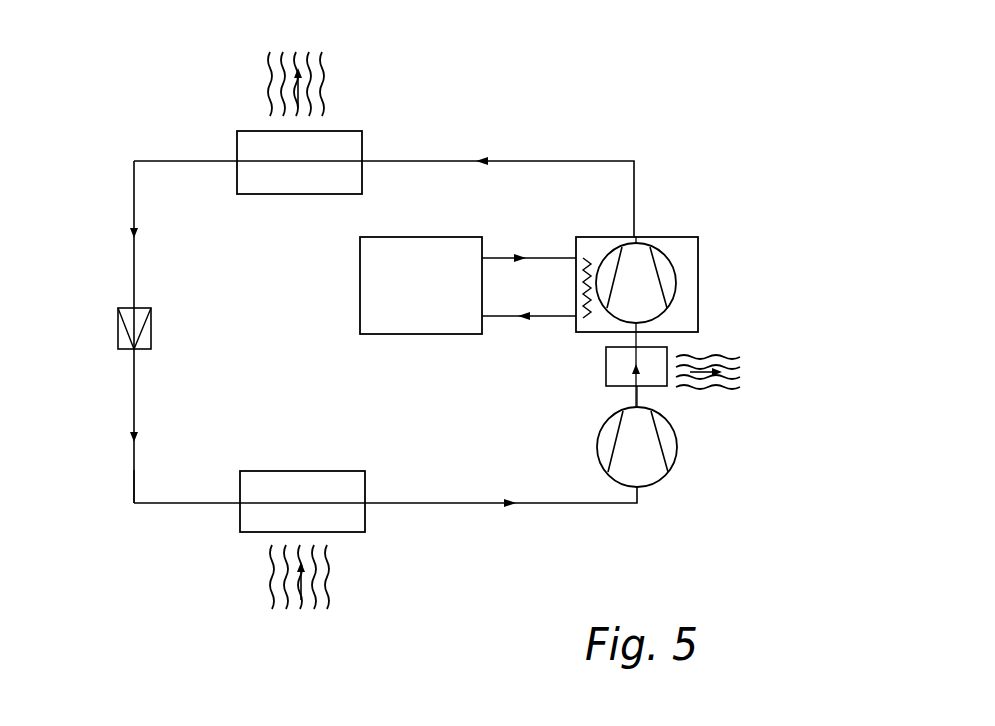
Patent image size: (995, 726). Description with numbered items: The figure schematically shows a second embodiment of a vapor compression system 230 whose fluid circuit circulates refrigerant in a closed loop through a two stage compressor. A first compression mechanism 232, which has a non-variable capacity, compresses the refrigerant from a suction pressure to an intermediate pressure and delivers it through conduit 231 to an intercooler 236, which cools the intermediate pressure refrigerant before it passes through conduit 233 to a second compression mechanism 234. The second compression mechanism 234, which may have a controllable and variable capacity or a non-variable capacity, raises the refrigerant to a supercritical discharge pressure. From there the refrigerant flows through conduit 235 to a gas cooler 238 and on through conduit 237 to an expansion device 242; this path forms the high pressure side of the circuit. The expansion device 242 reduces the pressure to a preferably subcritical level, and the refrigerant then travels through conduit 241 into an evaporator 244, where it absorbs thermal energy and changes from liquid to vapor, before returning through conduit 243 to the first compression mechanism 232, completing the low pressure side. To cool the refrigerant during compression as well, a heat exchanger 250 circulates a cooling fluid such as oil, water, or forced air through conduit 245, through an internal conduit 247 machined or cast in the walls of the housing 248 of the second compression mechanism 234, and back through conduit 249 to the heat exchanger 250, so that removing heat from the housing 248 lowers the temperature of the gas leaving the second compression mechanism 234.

The vapor compression system 230 is at (624, 82).
The conduit 231 is at (640, 395).
The first compression mechanism 232 is at (680, 450).
The conduit 233 is at (640, 340).
The second compression mechanism 234 is at (700, 270).
The conduit 235 is at (604, 161).
The intercooler 236 is at (606, 384).
The conduit 237 is at (134, 195).
The gas cooler 238 is at (362, 146).
The conduit 241 is at (134, 478).
The expansion device 242 is at (118, 330).
The conduit 243 is at (585, 503).
The evaporator 244 is at (365, 518).
The conduit 245 is at (500, 258).
The internal conduit 247 is at (596, 237).
The housing 248 is at (684, 238).
The conduit 249 is at (540, 318).
The heat exchanger 250 is at (421, 285).